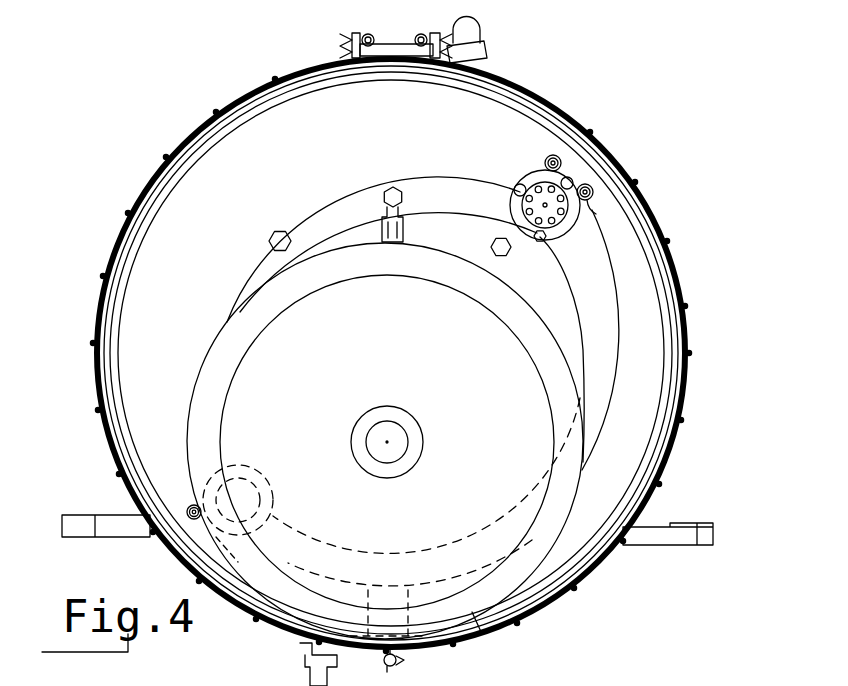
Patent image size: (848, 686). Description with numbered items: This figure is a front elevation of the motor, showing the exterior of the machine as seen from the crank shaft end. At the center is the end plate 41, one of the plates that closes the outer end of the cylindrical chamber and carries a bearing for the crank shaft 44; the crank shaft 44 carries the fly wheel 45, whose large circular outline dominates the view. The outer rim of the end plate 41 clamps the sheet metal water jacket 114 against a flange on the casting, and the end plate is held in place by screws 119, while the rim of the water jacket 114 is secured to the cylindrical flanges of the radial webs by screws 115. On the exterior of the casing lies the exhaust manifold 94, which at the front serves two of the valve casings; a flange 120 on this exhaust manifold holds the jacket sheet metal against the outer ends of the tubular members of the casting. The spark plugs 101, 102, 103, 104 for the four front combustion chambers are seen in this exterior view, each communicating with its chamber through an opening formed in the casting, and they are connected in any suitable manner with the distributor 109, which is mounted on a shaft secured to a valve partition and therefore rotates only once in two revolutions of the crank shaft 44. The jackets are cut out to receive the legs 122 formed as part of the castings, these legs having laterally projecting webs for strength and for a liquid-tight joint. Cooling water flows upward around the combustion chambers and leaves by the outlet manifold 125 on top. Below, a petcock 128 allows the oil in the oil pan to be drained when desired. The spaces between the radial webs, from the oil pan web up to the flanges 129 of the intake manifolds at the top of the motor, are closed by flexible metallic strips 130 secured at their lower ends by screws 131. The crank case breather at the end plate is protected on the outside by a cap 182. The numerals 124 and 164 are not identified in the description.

The end plate 41 is at (455, 212).
The crank shaft 44 is at (392, 441).
The fly wheel 45 is at (486, 628).
The exhaust manifold 94 is at (612, 345).
The spark plug 101 is at (548, 158).
The spark plug 102 is at (238, 523).
The spark plug 103 is at (190, 505).
The spark plug 104 is at (602, 208).
The distributor 109 is at (533, 189).
The water jacket 114 is at (158, 271).
The screw 115 is at (604, 558).
The screw 119 is at (271, 238).
The flange 120 is at (520, 225).
The leg 122 is at (98, 525).
The clip 124 is at (300, 672).
The outlet manifold 125 is at (483, 42).
The petcock 128 is at (396, 666).
The flange 129 is at (385, 58).
The flexible metallic strip 130 is at (682, 438).
The screw 131 is at (675, 463).
The support 164 is at (174, 682).
The cap 182 is at (383, 217).